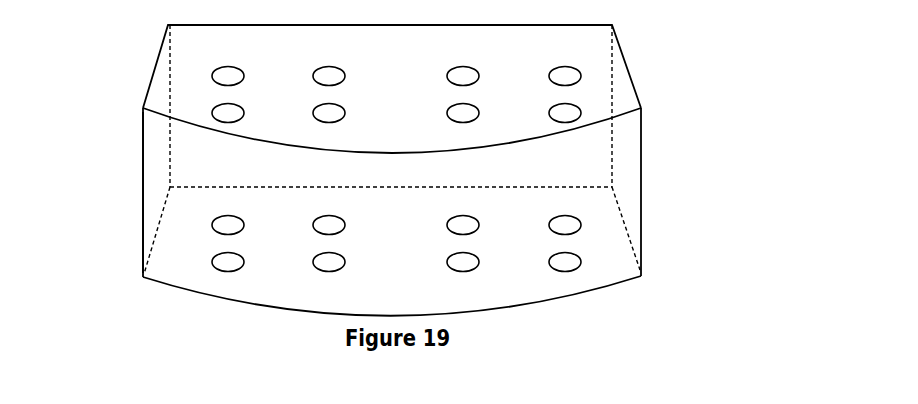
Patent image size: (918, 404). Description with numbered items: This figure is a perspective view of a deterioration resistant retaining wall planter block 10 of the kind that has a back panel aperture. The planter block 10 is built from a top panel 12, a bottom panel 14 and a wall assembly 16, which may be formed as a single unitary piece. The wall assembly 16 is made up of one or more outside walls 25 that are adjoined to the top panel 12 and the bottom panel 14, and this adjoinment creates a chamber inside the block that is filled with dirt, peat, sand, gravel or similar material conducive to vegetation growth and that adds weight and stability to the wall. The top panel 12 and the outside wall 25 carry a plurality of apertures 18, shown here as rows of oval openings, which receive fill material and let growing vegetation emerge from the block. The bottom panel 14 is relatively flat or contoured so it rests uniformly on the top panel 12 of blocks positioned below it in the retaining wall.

The retaining wall planter block 10 is at (712, 75).
The top panel 12 is at (252, 57).
The bottom panel 14 is at (550, 300).
The wall assembly 16 is at (130, 166).
The apertures 18 is at (563, 75).
The outside wall 25 is at (205, 261).